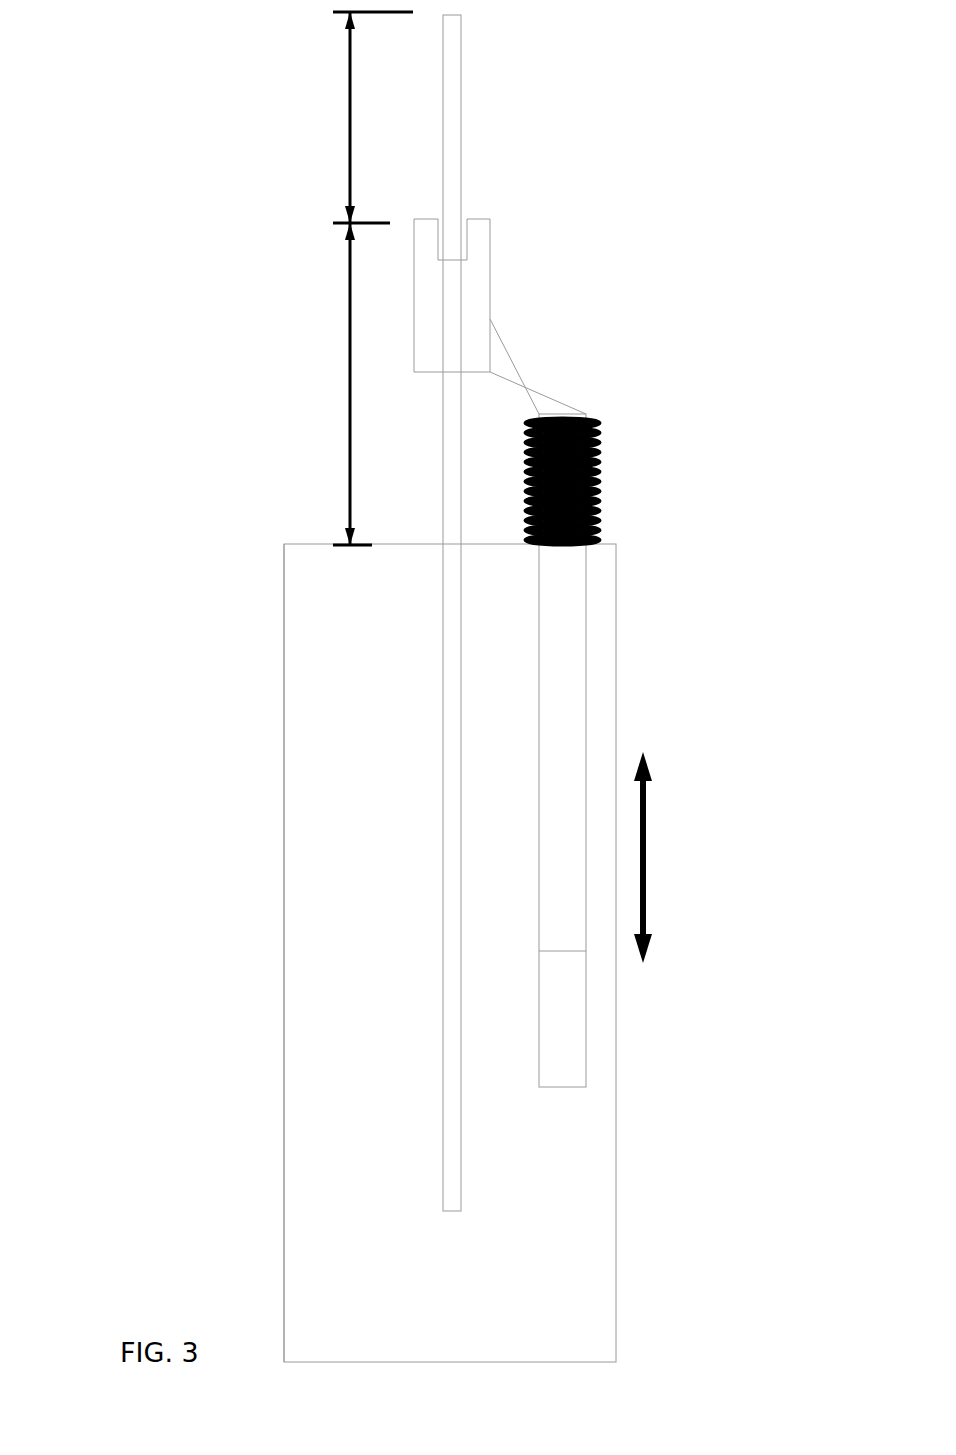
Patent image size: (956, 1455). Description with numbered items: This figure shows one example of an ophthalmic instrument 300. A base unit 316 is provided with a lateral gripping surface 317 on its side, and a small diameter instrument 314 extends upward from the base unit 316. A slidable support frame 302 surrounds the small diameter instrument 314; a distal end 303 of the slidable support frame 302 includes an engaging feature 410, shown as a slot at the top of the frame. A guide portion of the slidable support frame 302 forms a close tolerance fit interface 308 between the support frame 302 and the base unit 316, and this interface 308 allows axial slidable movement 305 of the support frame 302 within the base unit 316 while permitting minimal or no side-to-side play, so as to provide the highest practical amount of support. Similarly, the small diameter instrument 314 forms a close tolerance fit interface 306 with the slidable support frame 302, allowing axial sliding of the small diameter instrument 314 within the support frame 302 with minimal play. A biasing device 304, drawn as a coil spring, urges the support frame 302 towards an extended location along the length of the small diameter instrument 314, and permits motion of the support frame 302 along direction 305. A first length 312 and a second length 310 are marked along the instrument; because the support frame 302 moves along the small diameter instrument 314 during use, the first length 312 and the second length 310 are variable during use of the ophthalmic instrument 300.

The ophthalmic instrument 300 is at (210, 979).
The slidable support frame 302 is at (539, 370).
The distal end 303 is at (505, 188).
The biasing device 304 is at (600, 477).
The axial slidable movement 305 is at (643, 858).
The close tolerance fit interface 306 is at (438, 317).
The close tolerance fit interface 308 is at (592, 710).
The second length 310 is at (350, 385).
The first length 312 is at (350, 118).
The small diameter instrument 314 is at (461, 100).
The base unit 316 is at (593, 1190).
The lateral gripping surface 317 is at (284, 808).
The engaging feature 410 is at (479, 243).